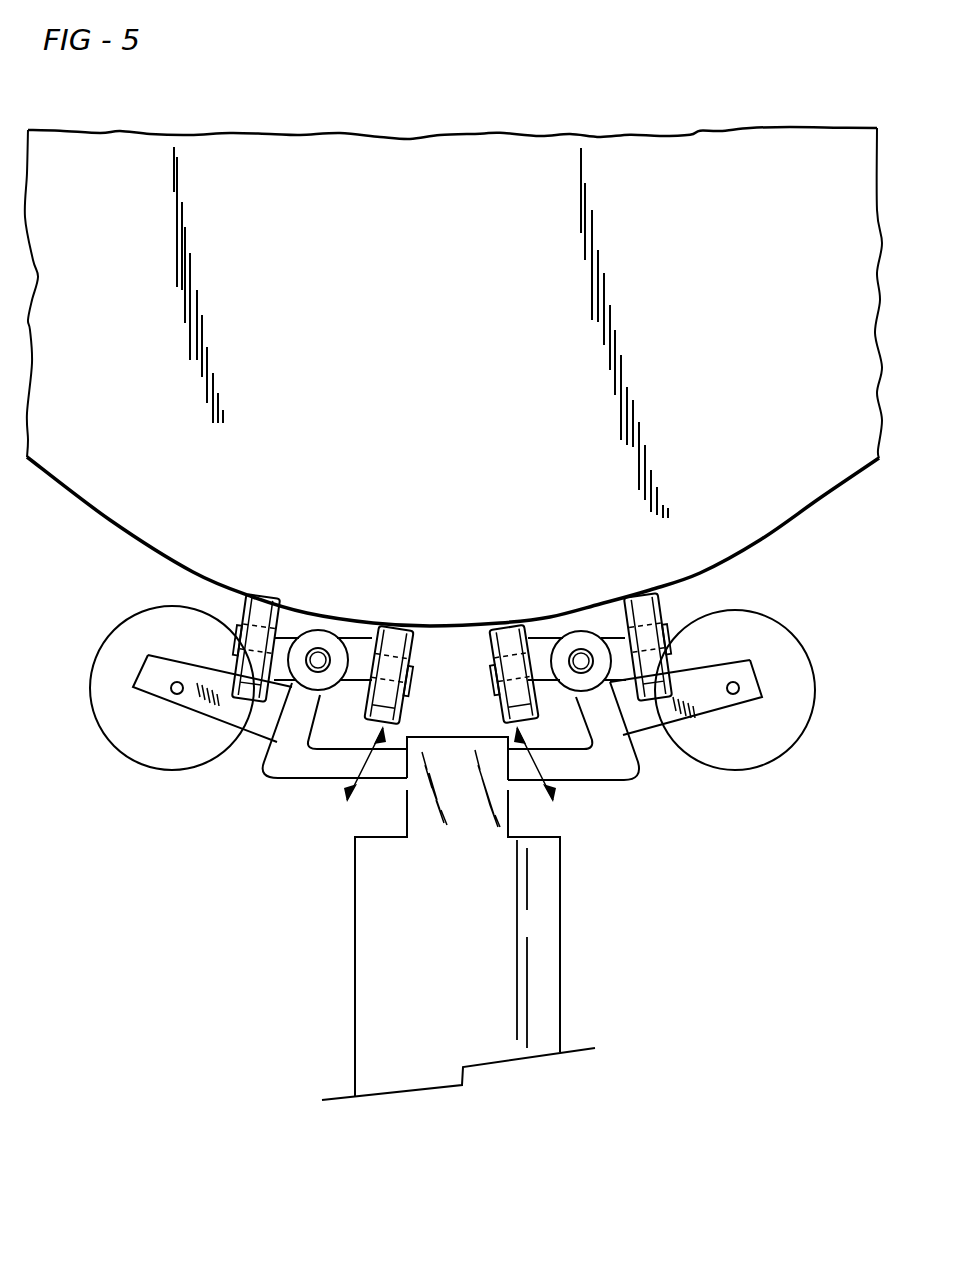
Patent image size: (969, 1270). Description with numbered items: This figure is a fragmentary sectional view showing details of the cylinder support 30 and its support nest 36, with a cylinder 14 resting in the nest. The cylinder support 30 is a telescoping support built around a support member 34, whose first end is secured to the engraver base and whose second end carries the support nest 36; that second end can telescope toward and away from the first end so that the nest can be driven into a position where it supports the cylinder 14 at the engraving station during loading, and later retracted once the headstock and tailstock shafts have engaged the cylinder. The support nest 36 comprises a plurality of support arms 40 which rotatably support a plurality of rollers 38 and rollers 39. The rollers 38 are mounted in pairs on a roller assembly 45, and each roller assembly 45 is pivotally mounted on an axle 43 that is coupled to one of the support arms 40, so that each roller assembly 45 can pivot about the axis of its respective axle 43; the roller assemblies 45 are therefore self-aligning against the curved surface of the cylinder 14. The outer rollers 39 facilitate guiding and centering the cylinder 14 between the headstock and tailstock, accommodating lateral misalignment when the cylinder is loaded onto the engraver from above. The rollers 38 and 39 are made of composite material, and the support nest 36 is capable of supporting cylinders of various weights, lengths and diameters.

The cylinder 14 is at (397, 378).
The cylinder support 30 is at (372, 1035).
The support member 34 is at (537, 1015).
The support nest 36 is at (224, 789).
The rollers 38 is at (396, 638).
The rollers 39 is at (140, 628).
The support arms 40 is at (333, 772).
The axle 43 is at (581, 661).
The roller assembly 45 is at (495, 690).